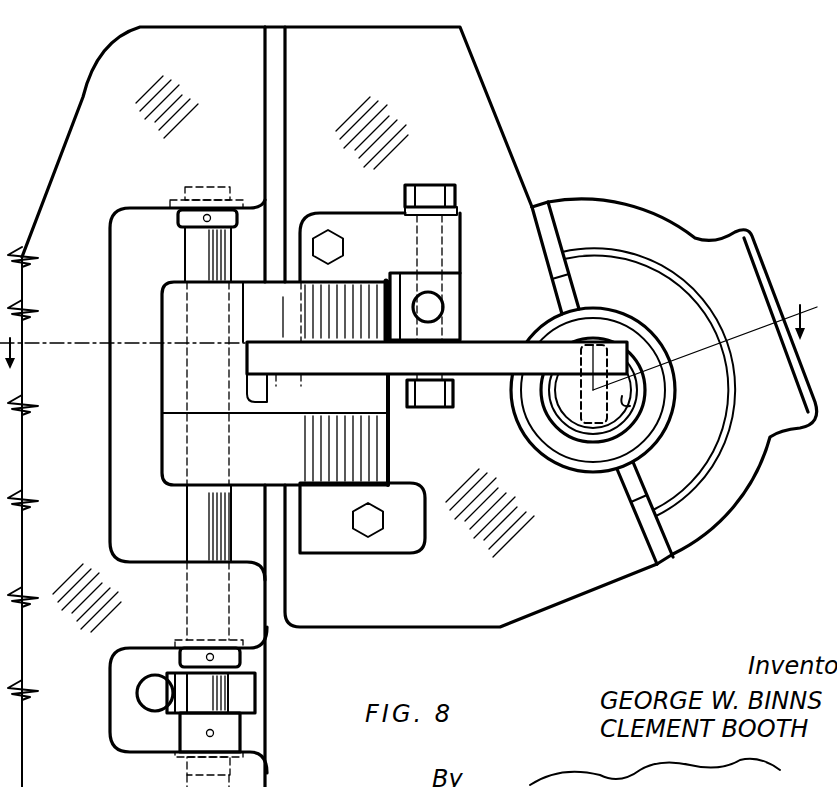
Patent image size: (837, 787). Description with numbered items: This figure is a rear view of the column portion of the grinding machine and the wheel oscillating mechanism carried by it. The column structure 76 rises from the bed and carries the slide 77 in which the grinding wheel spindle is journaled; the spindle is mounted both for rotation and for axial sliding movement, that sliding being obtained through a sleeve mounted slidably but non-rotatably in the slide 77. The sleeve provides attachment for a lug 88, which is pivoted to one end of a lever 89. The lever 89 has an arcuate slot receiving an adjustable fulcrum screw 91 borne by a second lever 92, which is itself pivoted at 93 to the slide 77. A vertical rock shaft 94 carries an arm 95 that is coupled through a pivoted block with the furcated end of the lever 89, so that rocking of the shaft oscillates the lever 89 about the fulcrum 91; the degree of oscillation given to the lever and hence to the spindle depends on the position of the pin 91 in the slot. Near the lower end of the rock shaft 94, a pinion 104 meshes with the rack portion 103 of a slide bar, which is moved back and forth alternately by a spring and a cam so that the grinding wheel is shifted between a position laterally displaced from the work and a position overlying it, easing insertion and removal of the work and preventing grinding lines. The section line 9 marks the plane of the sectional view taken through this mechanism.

The section line 9- 9 is at (408, 334).
The column structure 76 is at (86, 124).
The slide 77 is at (455, 80).
The lug 88 is at (630, 402).
The lever 89 is at (519, 330).
The adjustable fulcrum screw 91 is at (430, 408).
The lever 92 is at (437, 286).
The pivot 93 is at (435, 185).
The vertical rock shaft 94 is at (200, 241).
The arm 95 is at (176, 372).
The rack portion 103 is at (140, 690).
The pinion 104 is at (243, 700).